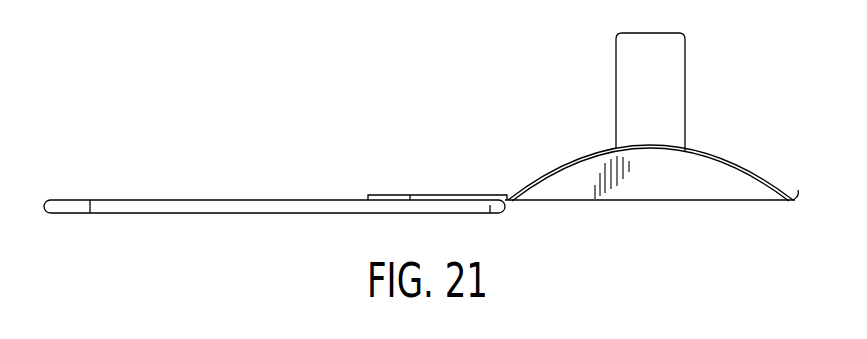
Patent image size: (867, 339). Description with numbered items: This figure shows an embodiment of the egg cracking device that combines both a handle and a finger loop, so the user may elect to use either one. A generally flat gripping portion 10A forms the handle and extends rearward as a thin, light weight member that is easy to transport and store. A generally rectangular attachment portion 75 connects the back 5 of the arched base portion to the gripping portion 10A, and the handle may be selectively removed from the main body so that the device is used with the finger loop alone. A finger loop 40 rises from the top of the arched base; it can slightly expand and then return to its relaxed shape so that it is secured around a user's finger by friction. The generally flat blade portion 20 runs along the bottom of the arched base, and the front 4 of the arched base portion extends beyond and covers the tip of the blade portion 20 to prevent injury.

The generally flat gripping portion 10A is at (153, 200).
The generally rectangular attachment portion 75 is at (428, 195).
The back 5 is at (506, 197).
The finger loop 40 is at (670, 79).
The front 4 is at (798, 200).
The generally flat blade portion 20 is at (670, 187).